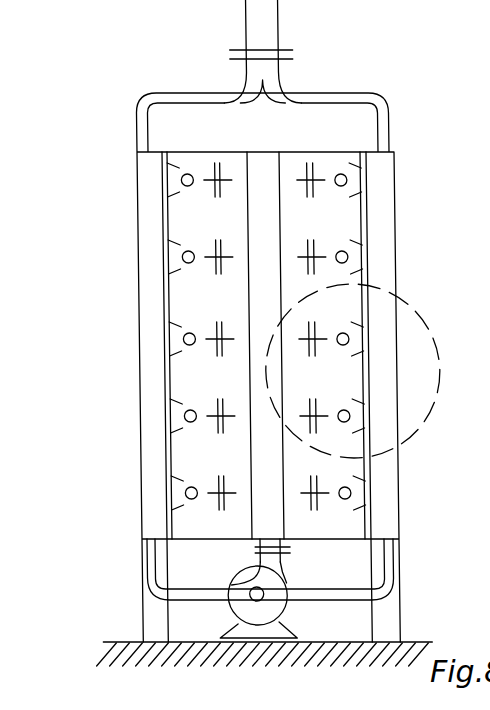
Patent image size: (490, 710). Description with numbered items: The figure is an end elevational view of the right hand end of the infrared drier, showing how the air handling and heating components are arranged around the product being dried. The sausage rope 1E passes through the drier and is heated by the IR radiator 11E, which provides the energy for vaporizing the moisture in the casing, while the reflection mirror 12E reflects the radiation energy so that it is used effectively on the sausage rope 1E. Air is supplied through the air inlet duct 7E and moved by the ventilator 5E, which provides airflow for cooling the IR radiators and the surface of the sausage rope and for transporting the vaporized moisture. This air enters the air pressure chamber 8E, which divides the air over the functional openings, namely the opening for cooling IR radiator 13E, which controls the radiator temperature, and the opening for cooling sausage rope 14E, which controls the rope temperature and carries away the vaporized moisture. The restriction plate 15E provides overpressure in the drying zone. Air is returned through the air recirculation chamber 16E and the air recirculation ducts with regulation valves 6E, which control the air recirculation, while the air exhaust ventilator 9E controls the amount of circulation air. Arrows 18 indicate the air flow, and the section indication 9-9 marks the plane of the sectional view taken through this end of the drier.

The air exhaust ventilator 9E is at (282, 52).
The air pressure chamber 8E is at (263, 157).
The air recirculation chamber 16E is at (147, 173).
The restriction plate 15E is at (165, 189).
The sausage rope 1E is at (188, 331).
The reflection mirror 12E is at (172, 321).
The IR radiator 11E is at (213, 272).
The section line 9-9 is at (396, 302).
The opening for cooling IR radiator 13E is at (489, 411).
The opening for cooling sausage rope 14E is at (489, 512).
The element 18 is at (483, 532).
The air inlet duct 7E is at (285, 546).
The air recirculation ducts with regulation valves 6E is at (137, 578).
The ventilator 5E is at (231, 612).